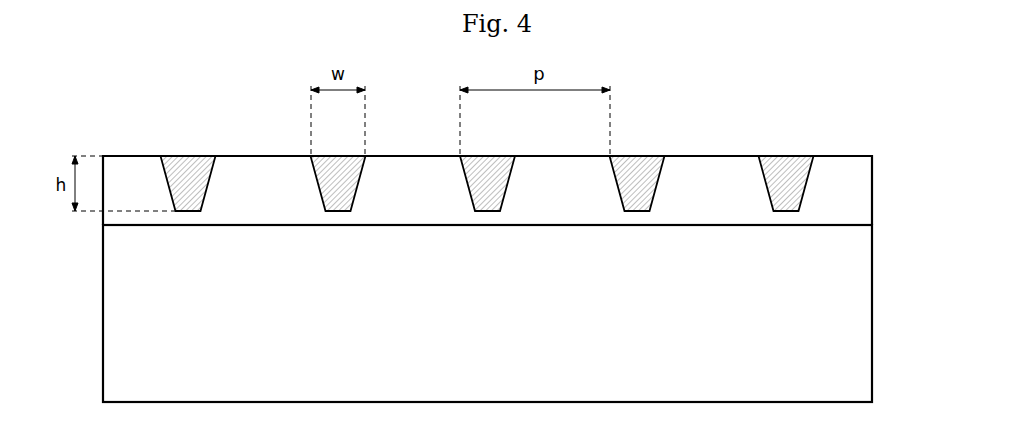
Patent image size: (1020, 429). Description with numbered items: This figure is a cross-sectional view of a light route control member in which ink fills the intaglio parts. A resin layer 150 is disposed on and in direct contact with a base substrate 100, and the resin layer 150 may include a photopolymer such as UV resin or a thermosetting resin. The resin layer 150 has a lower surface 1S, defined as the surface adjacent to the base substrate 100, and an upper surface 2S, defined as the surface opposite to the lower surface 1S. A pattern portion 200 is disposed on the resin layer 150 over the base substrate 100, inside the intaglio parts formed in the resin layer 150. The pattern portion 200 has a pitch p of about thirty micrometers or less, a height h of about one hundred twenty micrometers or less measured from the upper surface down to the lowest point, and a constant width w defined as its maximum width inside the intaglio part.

The base substrate 100 is at (872, 348).
The resin layer 150 is at (872, 190).
The pattern portion 200 is at (784, 165).
The lower surface 1S is at (808, 226).
The upper surface 2S is at (840, 156).